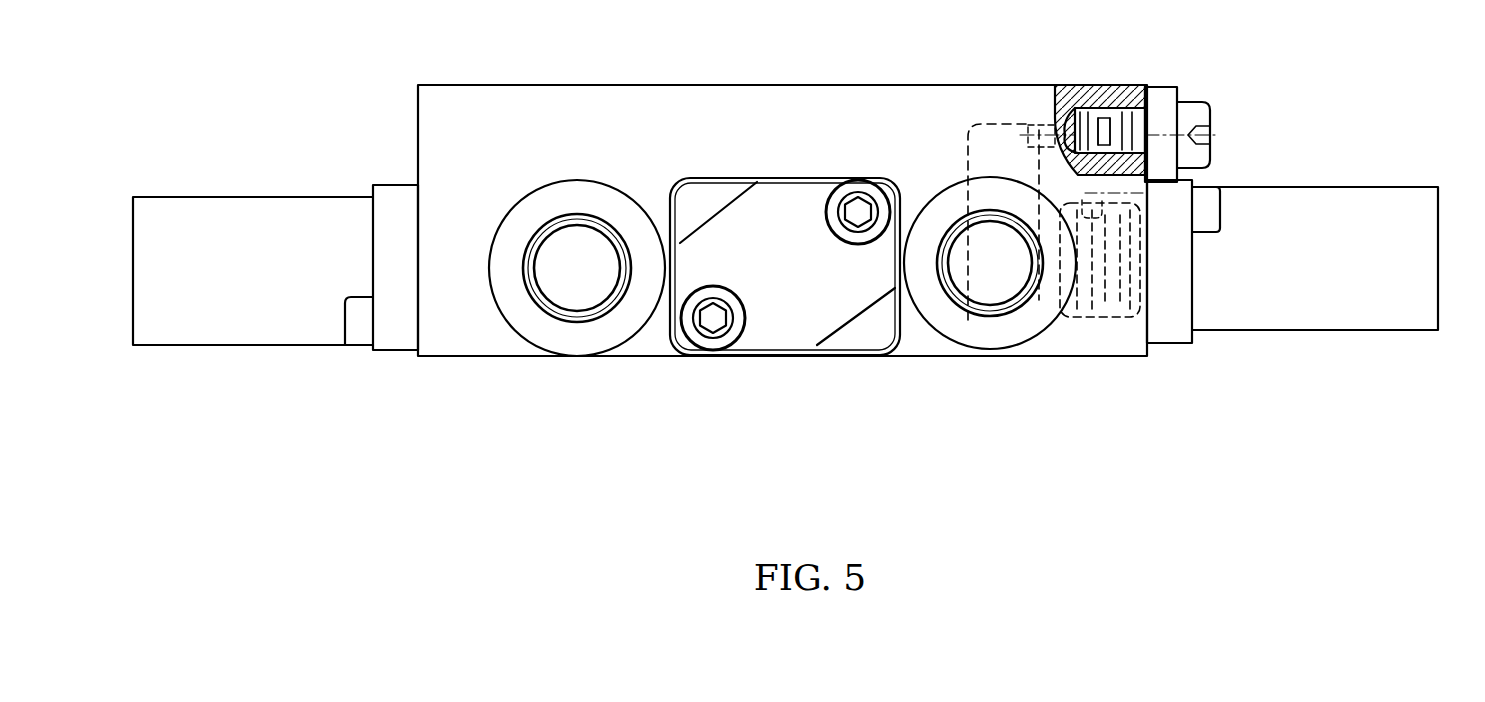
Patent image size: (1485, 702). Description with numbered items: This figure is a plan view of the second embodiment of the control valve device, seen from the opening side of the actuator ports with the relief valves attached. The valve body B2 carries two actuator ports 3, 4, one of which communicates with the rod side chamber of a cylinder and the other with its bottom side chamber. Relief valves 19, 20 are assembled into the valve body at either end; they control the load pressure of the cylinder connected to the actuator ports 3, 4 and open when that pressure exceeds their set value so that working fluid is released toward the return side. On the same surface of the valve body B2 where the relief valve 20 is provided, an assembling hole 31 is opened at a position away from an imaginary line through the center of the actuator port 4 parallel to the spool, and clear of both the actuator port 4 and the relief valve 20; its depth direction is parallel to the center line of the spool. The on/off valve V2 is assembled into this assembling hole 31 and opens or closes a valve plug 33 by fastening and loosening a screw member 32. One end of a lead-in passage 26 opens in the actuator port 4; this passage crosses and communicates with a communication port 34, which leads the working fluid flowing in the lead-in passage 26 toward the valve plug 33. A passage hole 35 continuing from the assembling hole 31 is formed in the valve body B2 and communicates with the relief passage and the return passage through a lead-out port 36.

The actuator port 3 is at (567, 238).
The actuator port 4 is at (965, 290).
The relief valve 19 is at (282, 207).
The relief valve 20 is at (1407, 200).
The lead-in passage 26 is at (966, 126).
The assembling hole 31 is at (1111, 86).
The screw member 32 is at (1214, 132).
The valve plug 33 is at (1056, 113).
The communication port 34 is at (1027, 134).
The passage hole 35 is at (1150, 196).
The lead-out port 36 is at (1150, 234).
The valve body B2 is at (768, 82).
The on/off valve V2 is at (1179, 84).